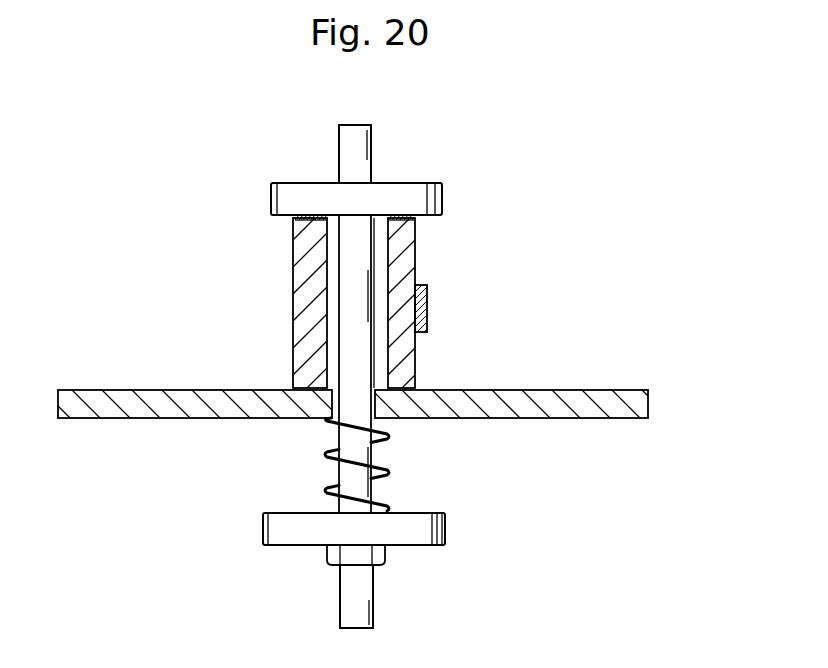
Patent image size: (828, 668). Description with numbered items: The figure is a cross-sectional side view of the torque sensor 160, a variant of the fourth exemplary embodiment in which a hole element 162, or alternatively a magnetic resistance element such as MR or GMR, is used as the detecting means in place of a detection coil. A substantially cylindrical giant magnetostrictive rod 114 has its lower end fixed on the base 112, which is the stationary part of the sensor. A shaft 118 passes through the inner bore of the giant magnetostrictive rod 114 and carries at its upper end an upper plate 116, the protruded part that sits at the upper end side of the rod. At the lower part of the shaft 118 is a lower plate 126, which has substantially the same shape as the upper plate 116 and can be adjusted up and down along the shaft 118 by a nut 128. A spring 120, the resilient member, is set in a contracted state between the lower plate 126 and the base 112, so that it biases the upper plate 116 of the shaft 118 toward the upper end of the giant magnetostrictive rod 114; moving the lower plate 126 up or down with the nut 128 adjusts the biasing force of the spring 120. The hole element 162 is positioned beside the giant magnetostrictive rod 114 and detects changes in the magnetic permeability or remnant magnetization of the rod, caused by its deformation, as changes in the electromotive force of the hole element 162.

The torque sensor 160 is at (516, 128).
The upper plate 116 is at (397, 190).
The shaft 118 is at (376, 604).
The giant magnetostrictive rod 114 is at (413, 373).
The hole element 162 is at (428, 306).
The base 112 is at (622, 396).
The spring 120 is at (327, 458).
The lower plate 126 is at (446, 530).
The nut 128 is at (327, 560).